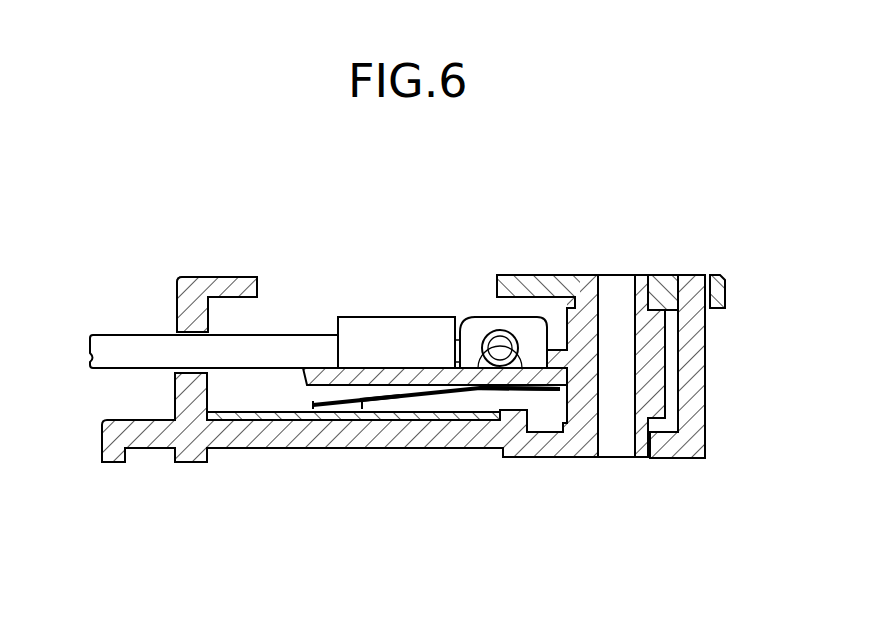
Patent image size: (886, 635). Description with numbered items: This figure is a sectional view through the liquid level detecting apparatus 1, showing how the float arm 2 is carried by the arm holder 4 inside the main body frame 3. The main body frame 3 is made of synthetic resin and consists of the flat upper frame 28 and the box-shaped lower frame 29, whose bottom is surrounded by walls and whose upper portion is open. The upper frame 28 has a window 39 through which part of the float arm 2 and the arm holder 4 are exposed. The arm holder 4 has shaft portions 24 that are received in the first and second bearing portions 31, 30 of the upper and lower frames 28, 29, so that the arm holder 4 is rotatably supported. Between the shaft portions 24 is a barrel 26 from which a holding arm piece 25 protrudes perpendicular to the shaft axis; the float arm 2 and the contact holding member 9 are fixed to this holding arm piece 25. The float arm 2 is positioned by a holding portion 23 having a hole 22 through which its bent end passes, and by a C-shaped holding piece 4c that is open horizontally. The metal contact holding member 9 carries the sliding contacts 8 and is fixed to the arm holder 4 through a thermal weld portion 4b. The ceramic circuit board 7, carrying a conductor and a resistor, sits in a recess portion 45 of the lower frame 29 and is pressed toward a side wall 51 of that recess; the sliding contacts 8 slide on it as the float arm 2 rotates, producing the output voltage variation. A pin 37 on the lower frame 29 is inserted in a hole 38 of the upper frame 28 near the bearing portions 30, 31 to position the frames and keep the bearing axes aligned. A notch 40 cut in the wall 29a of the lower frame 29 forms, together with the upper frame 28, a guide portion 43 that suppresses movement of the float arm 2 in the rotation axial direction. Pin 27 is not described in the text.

The liquid level detecting apparatus 1 is at (557, 275).
The float arm 2 is at (113, 333).
The main body frame 3 is at (258, 450).
The arm holder 4 is at (553, 345).
The thermal weld portion 4b is at (563, 453).
The holding piece 4c is at (418, 340).
The circuit board 7 is at (300, 425).
The sliding contacts 8 is at (362, 412).
The contact holding member 9 is at (440, 387).
The hole 22 is at (497, 335).
The holding portion 23 is at (478, 325).
The shaft portions 24 is at (640, 273).
The holding arm piece 25 is at (520, 455).
The barrel 26 is at (655, 397).
The pin 27 is at (625, 455).
The upper frame 28 is at (715, 273).
The lower frame 29 is at (542, 458).
The wall 29a is at (145, 437).
The second bearing portion 30 is at (665, 273).
The first bearing portion 31 is at (668, 458).
The pin 37 is at (705, 350).
The hole 38 is at (697, 273).
The window 39 is at (258, 285).
The notch 40 is at (180, 373).
The guide portion 43 is at (177, 325).
The recess portion 45 is at (395, 406).
The side wall 51 is at (480, 392).